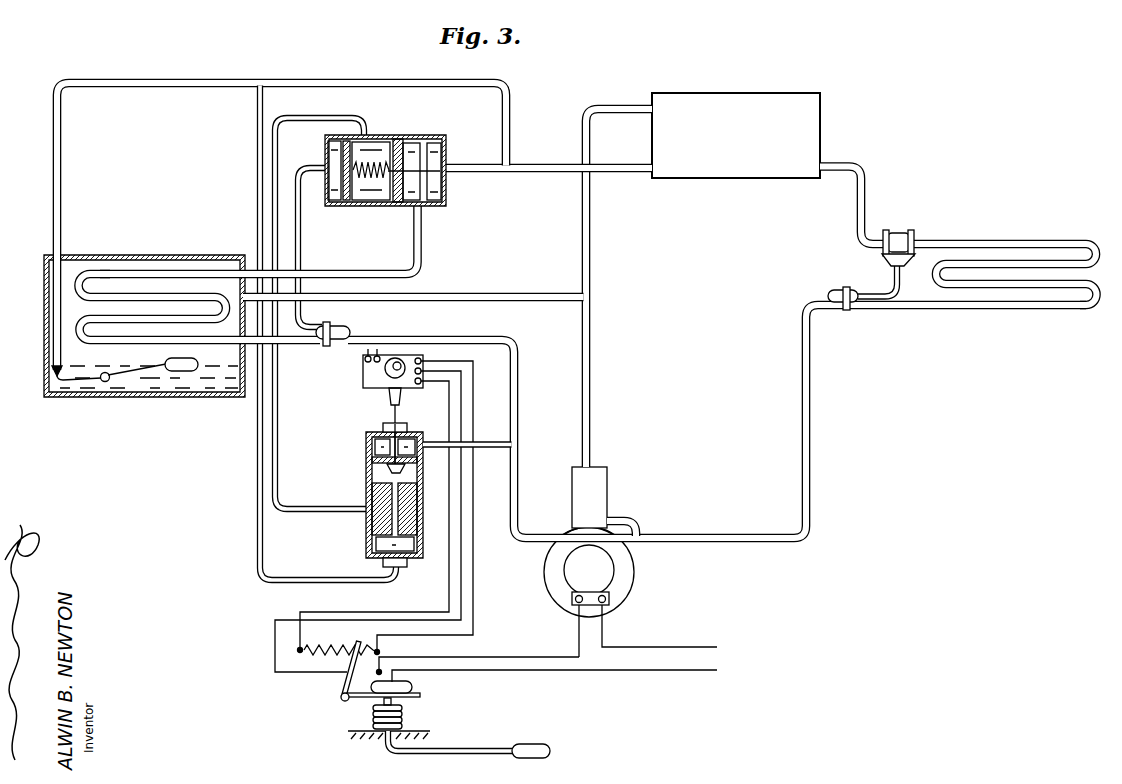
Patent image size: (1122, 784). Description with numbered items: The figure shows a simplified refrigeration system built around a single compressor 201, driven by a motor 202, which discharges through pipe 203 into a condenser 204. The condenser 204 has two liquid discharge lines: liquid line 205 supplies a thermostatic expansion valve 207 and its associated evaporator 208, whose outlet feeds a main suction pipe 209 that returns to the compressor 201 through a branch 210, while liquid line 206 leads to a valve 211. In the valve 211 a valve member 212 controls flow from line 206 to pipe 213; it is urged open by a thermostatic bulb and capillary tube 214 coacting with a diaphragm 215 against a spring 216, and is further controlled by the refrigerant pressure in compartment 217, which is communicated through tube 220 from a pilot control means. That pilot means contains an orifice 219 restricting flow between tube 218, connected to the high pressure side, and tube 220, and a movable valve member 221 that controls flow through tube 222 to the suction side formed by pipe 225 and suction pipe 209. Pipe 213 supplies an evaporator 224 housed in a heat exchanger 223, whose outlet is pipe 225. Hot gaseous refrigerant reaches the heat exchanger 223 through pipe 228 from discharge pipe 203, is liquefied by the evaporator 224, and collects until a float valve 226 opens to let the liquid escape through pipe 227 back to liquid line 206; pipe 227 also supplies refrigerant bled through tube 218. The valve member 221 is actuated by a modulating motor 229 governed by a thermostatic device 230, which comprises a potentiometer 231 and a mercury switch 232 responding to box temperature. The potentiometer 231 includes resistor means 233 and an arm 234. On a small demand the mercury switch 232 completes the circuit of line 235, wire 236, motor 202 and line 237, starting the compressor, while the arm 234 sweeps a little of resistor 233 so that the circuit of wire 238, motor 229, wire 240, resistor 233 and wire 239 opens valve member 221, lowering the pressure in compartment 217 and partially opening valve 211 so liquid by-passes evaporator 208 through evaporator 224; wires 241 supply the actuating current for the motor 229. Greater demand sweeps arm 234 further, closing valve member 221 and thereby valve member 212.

The compressor 201 is at (600, 489).
The motor 202 is at (605, 570).
The discharge pipe 203 is at (590, 234).
The condenser 204 is at (735, 100).
The liquid line 205 is at (856, 164).
The liquid line 206 is at (538, 163).
The thermostatic expansion valve 207 is at (904, 229).
The evaporator 208 is at (1030, 243).
The main suction pipe 209 is at (748, 540).
The branch 210 is at (638, 516).
The valve 211 is at (404, 298).
The valve member 212 is at (434, 173).
The pipe 213 is at (375, 270).
The thermostatic bulb and capillary tube 214 is at (302, 258).
The diaphragm 215 is at (345, 198).
The spring 216 is at (372, 160).
The compartment 217 is at (375, 196).
The tube 218 is at (256, 156).
The orifice 219 is at (372, 495).
The tube 220 is at (278, 435).
The valve member 221 is at (384, 468).
The tube 222 is at (510, 437).
The heat exchanger 223 is at (204, 255).
The evaporator 224 is at (118, 268).
The pipe 225 is at (470, 337).
The float valve 226 is at (127, 381).
The pipe 227 is at (170, 80).
The pipe 228 is at (500, 295).
The modulating motor 229 is at (363, 383).
The thermostatic device 230 is at (376, 735).
The potentiometer 231 is at (336, 681).
The mercury switch 232 is at (412, 686).
The resistor means 233 is at (340, 649).
The arm 234 is at (301, 661).
The line 235 is at (660, 671).
The wire 236 is at (505, 658).
The line 237 is at (664, 646).
The wire 238 is at (274, 641).
The wire 239 is at (475, 617).
The wire 240 is at (416, 611).
The wires 241 is at (364, 357).